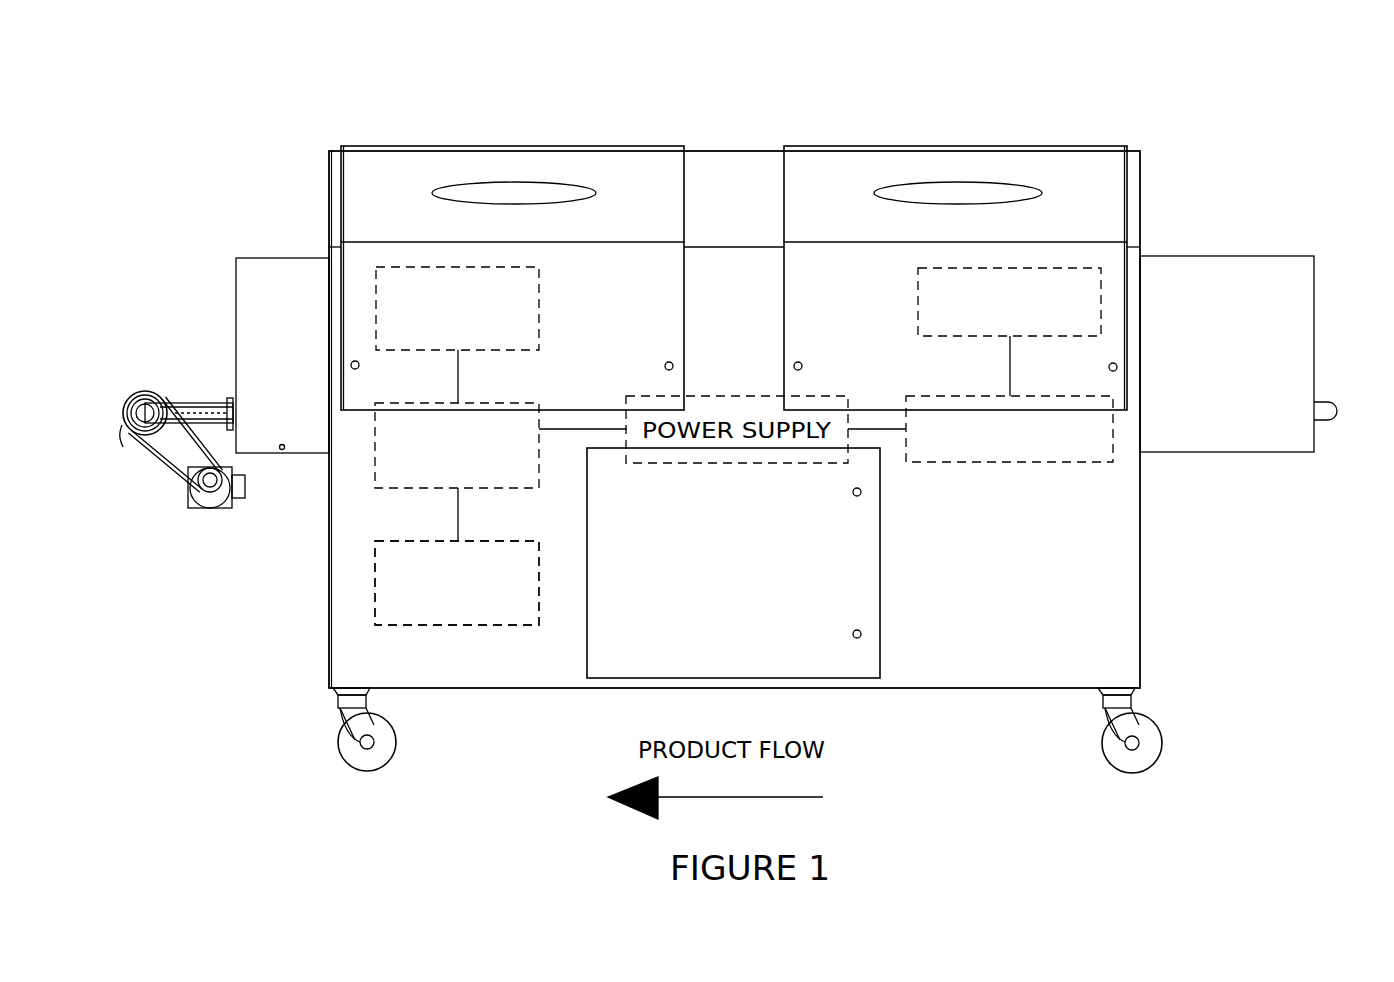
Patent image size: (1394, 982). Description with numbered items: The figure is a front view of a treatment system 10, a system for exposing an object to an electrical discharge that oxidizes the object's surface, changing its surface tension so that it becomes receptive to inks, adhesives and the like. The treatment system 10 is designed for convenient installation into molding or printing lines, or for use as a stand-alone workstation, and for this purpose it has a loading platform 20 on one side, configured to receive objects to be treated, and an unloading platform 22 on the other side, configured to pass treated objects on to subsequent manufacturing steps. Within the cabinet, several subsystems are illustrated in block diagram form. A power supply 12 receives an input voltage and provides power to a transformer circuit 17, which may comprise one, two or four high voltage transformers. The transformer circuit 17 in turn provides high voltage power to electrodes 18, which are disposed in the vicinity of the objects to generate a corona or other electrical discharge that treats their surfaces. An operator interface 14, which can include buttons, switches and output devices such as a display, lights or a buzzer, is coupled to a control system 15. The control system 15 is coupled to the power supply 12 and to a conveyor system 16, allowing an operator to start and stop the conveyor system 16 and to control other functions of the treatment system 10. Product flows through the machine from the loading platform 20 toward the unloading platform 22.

The treatment system 10 is at (1200, 87).
The power supply 12 is at (548, 573).
The operator interface 14 is at (549, 307).
The control system 15 is at (369, 479).
The conveyor system 16 is at (369, 600).
The transformer circuit 17 is at (1022, 471).
The electrodes 18 is at (913, 298).
The loading platform 20 is at (1331, 402).
The unloading platform 22 is at (161, 391).